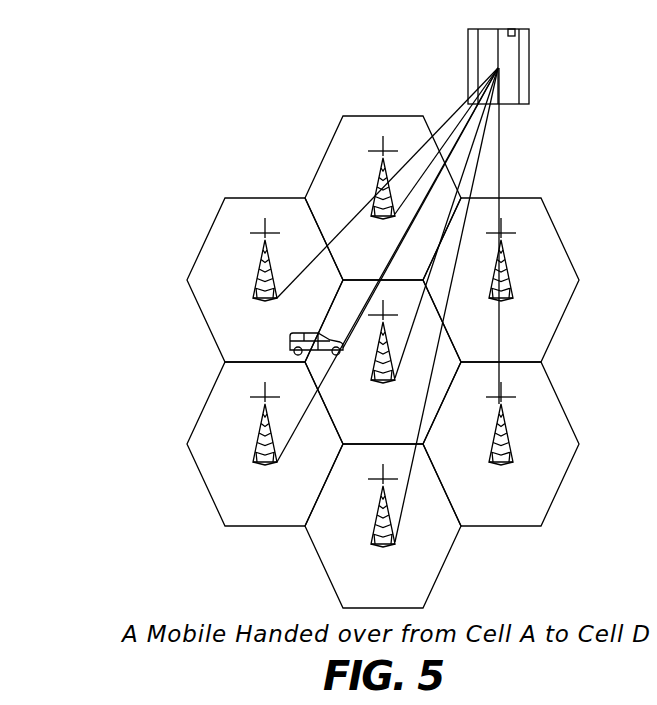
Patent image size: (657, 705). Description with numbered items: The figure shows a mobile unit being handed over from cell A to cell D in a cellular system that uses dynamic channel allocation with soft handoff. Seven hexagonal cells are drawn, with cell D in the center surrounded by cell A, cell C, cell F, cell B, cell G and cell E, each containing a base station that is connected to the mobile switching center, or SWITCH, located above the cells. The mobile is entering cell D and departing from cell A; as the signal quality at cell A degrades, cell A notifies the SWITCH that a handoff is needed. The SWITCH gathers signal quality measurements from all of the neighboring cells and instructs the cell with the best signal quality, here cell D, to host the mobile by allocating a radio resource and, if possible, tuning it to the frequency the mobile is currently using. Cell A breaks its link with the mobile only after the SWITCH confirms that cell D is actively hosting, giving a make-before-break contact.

The cell A is at (265, 280).
The cell B is at (501, 444).
The cell C is at (383, 198).
The cell D is at (383, 362).
The cell E is at (265, 444).
The cell F is at (501, 280).
The cell G is at (383, 526).
The MSC SWITCH is at (547, 66).